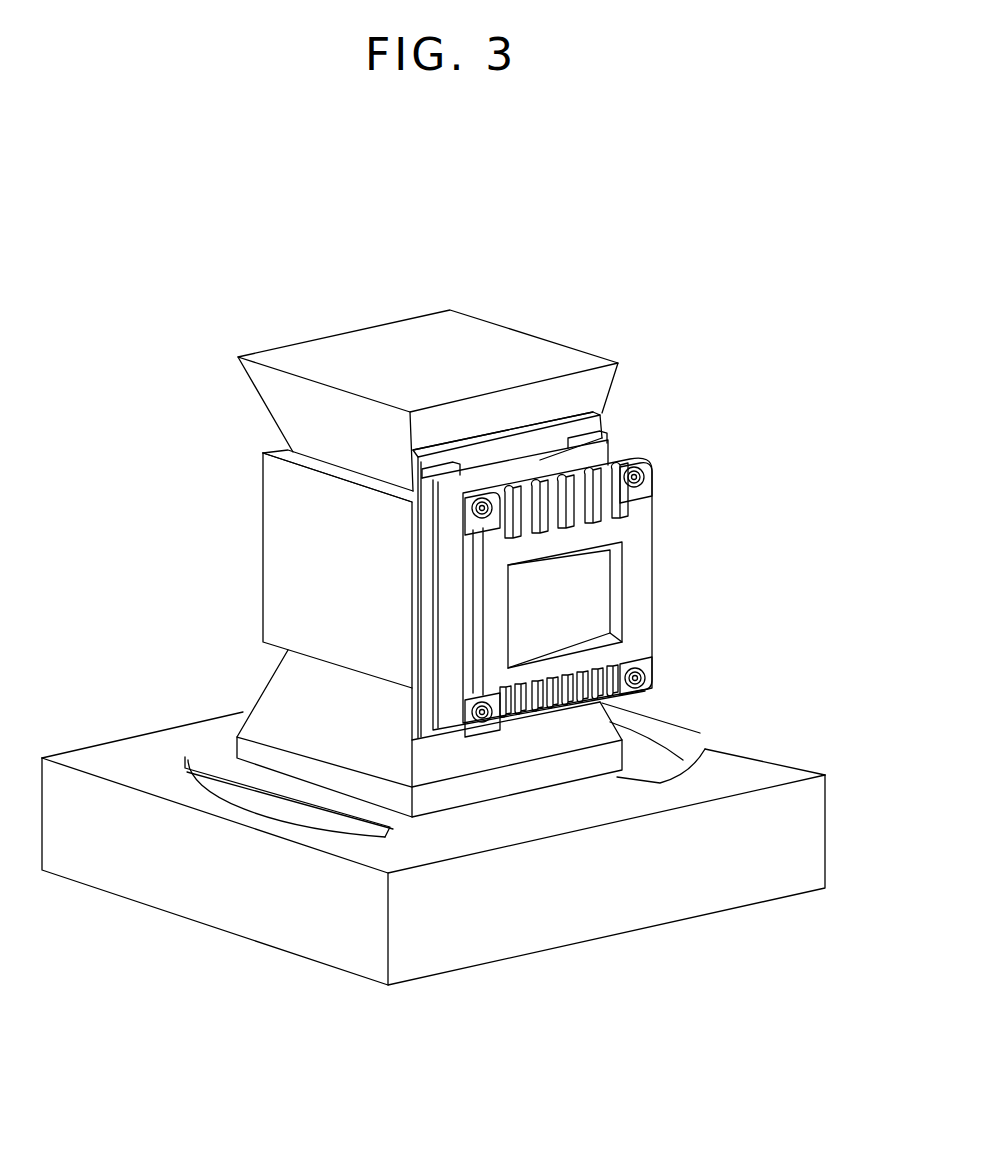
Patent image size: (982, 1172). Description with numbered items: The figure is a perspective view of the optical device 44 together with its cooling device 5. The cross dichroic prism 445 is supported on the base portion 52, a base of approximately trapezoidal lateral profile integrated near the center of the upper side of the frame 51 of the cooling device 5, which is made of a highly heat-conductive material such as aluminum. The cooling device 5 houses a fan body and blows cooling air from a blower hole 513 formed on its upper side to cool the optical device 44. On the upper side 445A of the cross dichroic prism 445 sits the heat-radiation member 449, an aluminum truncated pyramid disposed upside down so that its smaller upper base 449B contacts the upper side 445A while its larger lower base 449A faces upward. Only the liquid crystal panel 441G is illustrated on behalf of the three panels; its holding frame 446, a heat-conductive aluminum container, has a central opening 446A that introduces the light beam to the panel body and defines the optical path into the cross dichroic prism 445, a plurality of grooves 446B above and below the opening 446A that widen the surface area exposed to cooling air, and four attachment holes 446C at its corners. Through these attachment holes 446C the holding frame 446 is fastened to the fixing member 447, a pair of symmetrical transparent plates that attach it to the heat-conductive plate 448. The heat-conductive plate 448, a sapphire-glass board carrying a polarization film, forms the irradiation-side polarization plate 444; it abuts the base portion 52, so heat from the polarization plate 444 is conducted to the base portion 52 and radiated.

The optical device 44 is at (733, 268).
The irradiation-side polarization plate 444 is at (719, 345).
The cross dichroic prism 445 is at (283, 563).
The upper side of cross dichroic prism 445A is at (340, 472).
The holding frame 446 is at (643, 545).
The opening 446A is at (615, 590).
The groove 446B is at (607, 500).
The attachment hole 446C is at (640, 473).
The fixing member 447 is at (605, 447).
The heat-conductive plate 448 is at (593, 423).
The heat-radiation member 449 is at (527, 347).
The lower base of heat-radiation member 449A is at (372, 343).
The upper base of heat-radiation member 449B is at (300, 467).
The liquid crystal panel 441G is at (676, 620).
The cooling device 5 is at (130, 622).
The frame 51 is at (188, 735).
The blower hole 513 is at (640, 790).
The base portion 52 is at (267, 700).